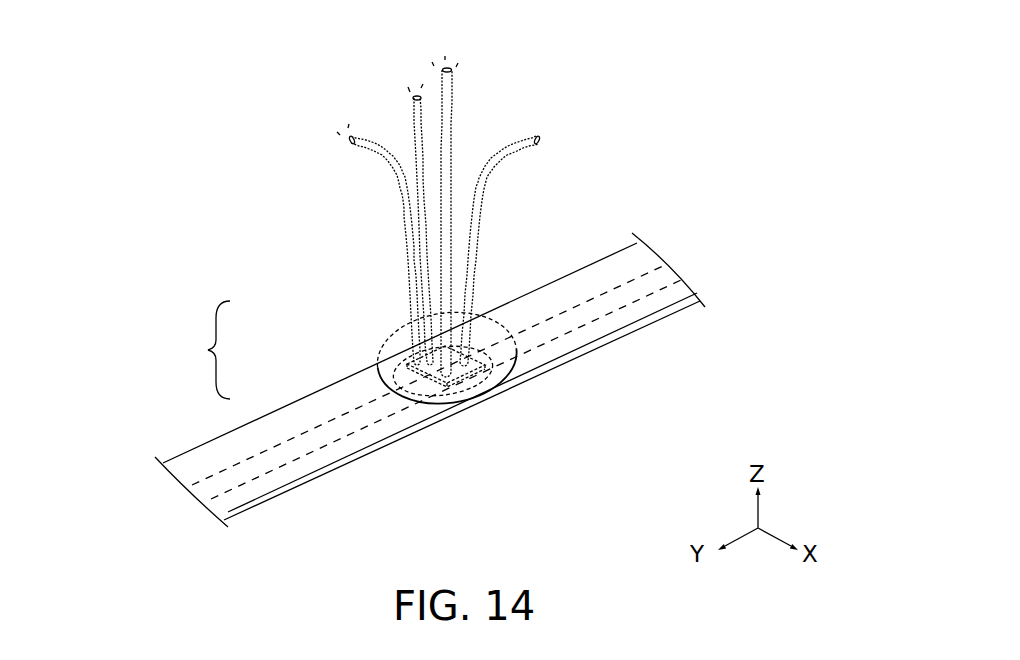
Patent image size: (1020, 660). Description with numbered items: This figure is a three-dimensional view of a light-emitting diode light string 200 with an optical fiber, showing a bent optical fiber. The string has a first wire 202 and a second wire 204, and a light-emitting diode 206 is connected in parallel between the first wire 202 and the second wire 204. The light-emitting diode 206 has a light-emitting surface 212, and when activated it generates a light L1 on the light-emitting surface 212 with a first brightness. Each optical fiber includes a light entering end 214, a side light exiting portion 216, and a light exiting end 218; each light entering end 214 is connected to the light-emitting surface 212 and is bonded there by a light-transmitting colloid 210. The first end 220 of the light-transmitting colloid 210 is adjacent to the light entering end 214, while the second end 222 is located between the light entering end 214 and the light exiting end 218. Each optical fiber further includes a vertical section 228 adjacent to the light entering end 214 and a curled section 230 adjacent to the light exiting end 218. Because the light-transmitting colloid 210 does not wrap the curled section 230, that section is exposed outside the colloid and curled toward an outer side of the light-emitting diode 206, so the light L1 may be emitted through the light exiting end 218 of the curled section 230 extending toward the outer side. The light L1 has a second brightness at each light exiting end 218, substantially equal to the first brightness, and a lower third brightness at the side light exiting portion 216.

The light-emitting diode light string 200 is at (66, 86).
The first wire 202 is at (218, 470).
The second wire 204 is at (263, 470).
The light-emitting diode 206 is at (432, 383).
The light-transmitting colloid 210 is at (344, 356).
The light-emitting surface 212 is at (413, 349).
The light entering end 214 is at (432, 433).
The side light exiting portion 216 is at (583, 222).
The light exiting end 218 is at (553, 138).
The first end 220 is at (370, 391).
The second end 222 is at (387, 342).
The vertical section 228 is at (477, 257).
The curled section 230 is at (515, 148).
The light L1 is at (417, 92).